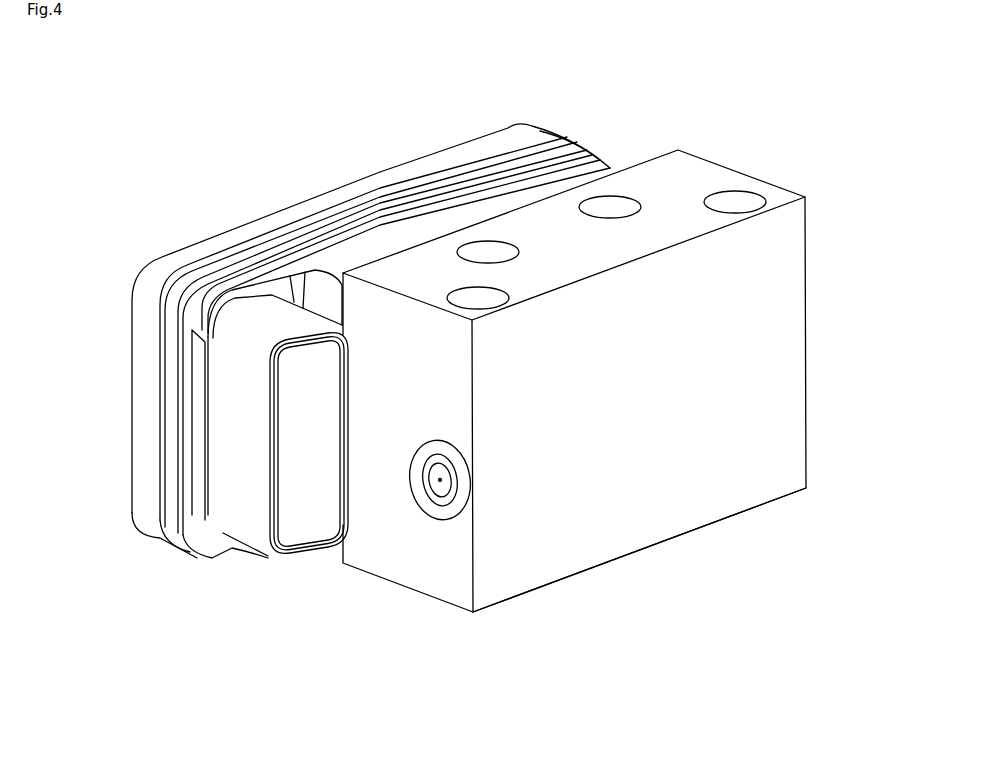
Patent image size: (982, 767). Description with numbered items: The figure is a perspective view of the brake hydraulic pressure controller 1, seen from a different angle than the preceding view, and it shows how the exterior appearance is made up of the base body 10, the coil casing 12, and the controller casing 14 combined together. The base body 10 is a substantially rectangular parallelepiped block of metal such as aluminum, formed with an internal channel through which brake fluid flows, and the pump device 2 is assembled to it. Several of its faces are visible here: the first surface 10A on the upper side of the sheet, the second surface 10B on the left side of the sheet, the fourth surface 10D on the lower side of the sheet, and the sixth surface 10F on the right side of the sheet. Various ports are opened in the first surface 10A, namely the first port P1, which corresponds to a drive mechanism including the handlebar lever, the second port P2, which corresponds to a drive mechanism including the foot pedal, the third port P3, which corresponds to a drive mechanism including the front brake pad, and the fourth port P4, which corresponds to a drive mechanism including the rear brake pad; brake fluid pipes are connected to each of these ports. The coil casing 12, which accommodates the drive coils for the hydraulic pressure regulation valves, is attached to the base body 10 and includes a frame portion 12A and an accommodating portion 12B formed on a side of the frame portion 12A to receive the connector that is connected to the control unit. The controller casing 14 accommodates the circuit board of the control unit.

The brake hydraulic pressure controller 1 is at (256, 149).
The pump device 2 is at (437, 492).
The base body 10 is at (615, 374).
The first surface 10A is at (570, 196).
The second surface 10B is at (456, 593).
The fourth surface 10D is at (409, 475).
The sixth surface 10F is at (780, 283).
The coil casing 12 is at (340, 376).
The frame portion 12A is at (498, 203).
The accommodating portion 12B is at (317, 525).
The controller casing 14 is at (235, 228).
The first port P1 is at (735, 200).
The second port P2 is at (462, 300).
The third port P3 is at (607, 205).
The fourth port P4 is at (470, 258).